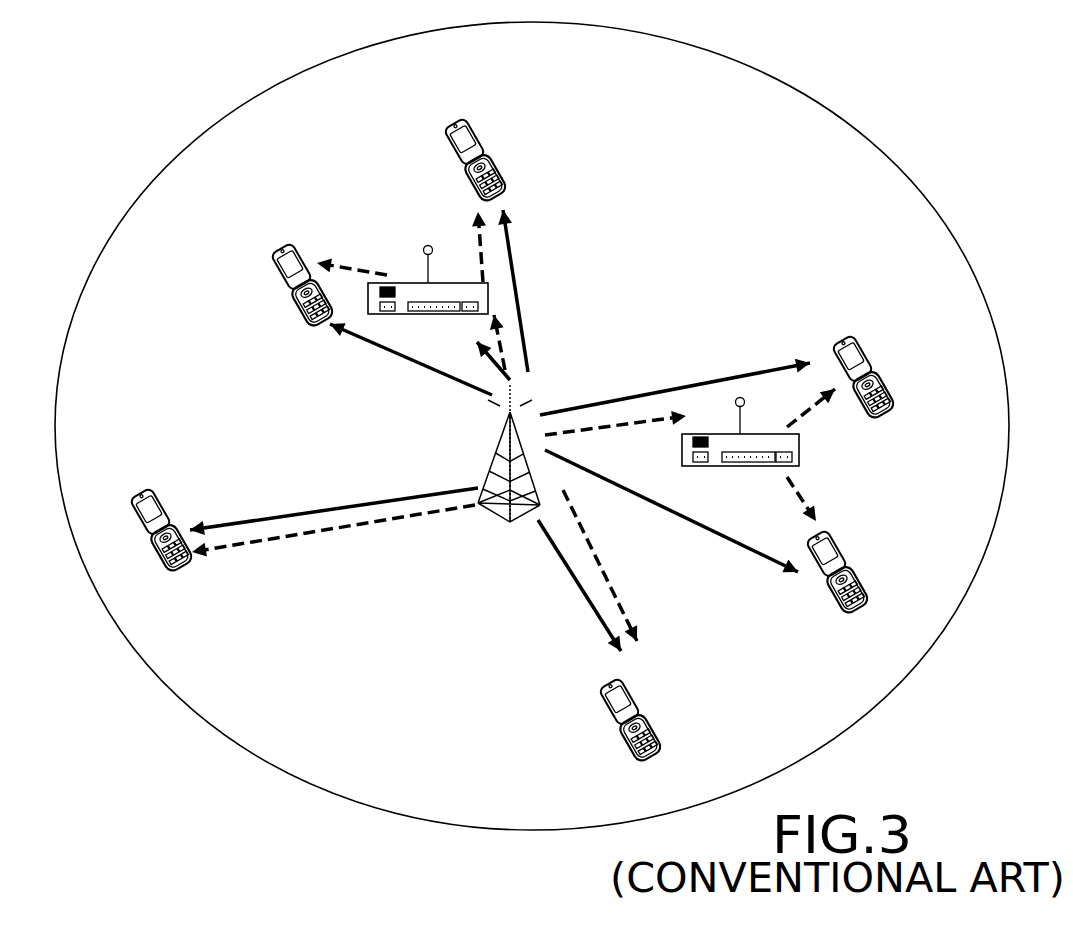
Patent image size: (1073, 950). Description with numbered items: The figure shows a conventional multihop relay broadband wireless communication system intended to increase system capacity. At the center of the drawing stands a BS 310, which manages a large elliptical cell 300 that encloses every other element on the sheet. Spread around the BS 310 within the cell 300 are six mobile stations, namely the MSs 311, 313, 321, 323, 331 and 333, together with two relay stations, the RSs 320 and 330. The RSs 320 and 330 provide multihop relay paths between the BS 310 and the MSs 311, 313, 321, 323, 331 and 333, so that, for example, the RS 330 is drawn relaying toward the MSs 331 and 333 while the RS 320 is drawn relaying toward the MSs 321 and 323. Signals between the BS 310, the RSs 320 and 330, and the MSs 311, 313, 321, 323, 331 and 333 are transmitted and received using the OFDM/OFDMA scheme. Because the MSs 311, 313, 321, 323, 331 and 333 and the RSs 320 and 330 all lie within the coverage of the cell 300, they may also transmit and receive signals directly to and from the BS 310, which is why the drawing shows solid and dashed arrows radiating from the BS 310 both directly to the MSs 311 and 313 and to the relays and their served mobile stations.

The cell 300 is at (532, 426).
The BS 310 is at (493, 513).
The MS 311 is at (153, 490).
The MS 313 is at (623, 681).
The RS 320 is at (740, 467).
The MS 321 is at (853, 338).
The MS 323 is at (826, 534).
The RS 330 is at (425, 315).
The MS 331 is at (294, 246).
The MS 333 is at (466, 119).